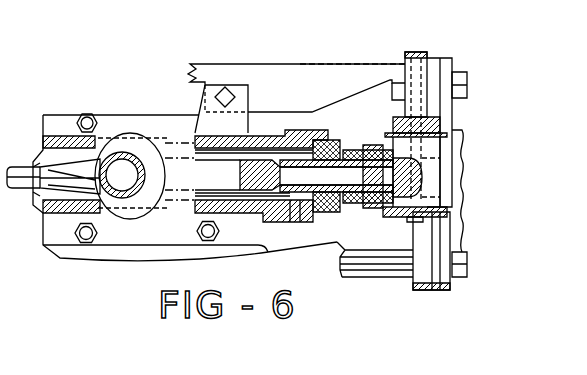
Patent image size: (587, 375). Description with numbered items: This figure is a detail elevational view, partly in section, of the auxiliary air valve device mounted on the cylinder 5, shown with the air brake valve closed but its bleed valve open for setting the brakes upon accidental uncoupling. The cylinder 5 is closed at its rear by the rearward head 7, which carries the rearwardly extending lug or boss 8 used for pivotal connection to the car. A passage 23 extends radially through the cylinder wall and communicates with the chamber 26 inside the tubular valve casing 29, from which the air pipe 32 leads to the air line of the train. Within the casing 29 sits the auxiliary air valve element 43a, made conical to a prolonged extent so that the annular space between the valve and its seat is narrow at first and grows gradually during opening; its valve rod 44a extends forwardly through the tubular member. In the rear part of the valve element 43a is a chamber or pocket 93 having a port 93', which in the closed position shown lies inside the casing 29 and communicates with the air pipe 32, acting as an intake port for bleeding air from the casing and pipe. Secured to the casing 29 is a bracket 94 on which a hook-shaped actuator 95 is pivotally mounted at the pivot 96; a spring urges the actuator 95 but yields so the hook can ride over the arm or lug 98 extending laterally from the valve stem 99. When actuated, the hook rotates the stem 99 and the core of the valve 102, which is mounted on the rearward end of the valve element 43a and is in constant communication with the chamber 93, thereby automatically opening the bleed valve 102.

The cylinder 5 is at (393, 278).
The rearward head 7 is at (440, 282).
The lug or boss 8 is at (467, 268).
The passage 23 is at (60, 160).
The chamber 26 is at (232, 138).
The valve casing or tubular member 29 is at (157, 137).
The air pipe 32 is at (118, 197).
The auxiliary air valve element 43a is at (72, 188).
The valve rod 44a is at (28, 168).
The chamber or pocket 93 is at (336, 187).
The port 93' is at (291, 218).
The bracket 94 is at (180, 114).
The hook-shaped actuator 95 is at (333, 73).
The pivot 96 is at (226, 95).
The arm or lug 98 is at (397, 90).
The valve stem 99 is at (411, 52).
The valve 102 is at (412, 203).